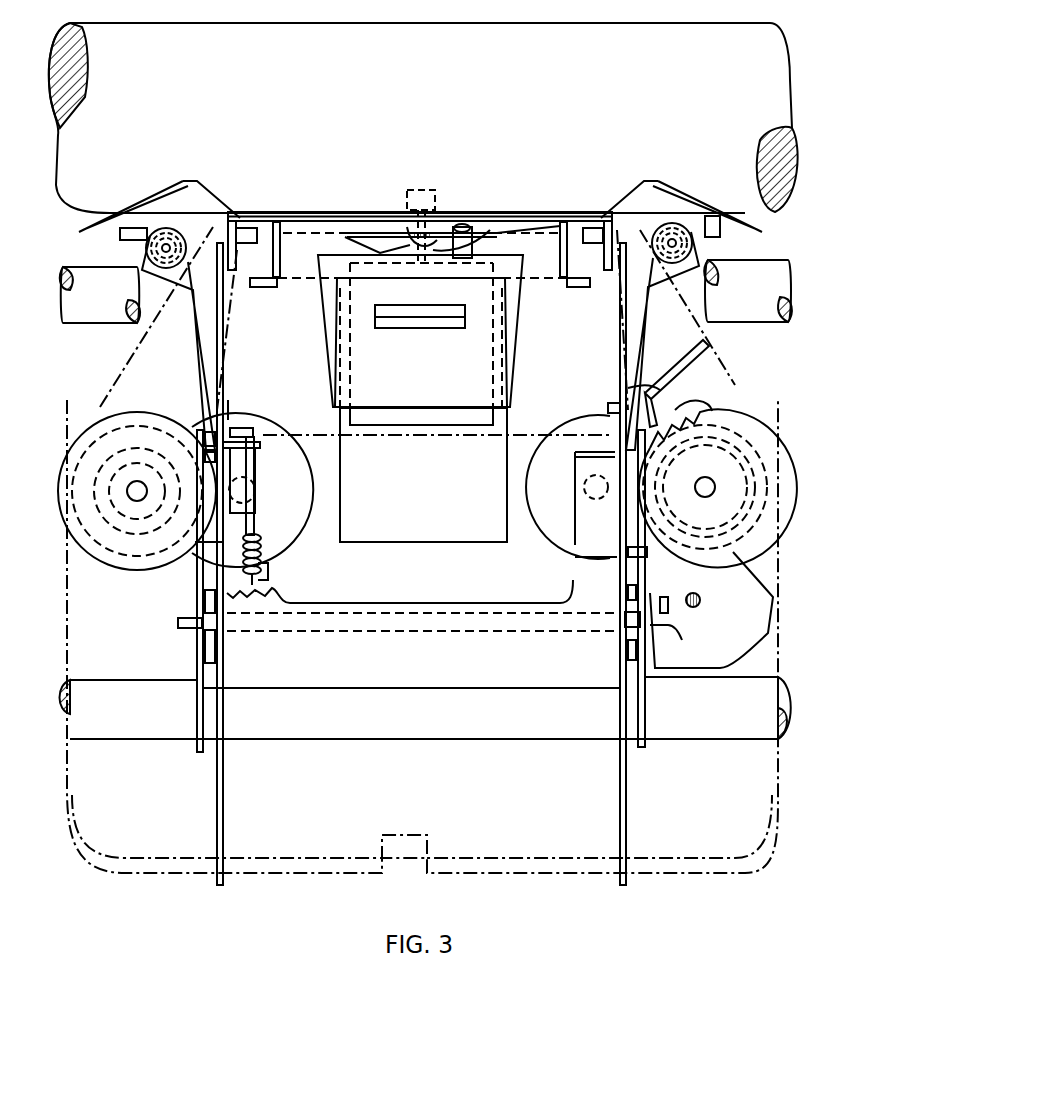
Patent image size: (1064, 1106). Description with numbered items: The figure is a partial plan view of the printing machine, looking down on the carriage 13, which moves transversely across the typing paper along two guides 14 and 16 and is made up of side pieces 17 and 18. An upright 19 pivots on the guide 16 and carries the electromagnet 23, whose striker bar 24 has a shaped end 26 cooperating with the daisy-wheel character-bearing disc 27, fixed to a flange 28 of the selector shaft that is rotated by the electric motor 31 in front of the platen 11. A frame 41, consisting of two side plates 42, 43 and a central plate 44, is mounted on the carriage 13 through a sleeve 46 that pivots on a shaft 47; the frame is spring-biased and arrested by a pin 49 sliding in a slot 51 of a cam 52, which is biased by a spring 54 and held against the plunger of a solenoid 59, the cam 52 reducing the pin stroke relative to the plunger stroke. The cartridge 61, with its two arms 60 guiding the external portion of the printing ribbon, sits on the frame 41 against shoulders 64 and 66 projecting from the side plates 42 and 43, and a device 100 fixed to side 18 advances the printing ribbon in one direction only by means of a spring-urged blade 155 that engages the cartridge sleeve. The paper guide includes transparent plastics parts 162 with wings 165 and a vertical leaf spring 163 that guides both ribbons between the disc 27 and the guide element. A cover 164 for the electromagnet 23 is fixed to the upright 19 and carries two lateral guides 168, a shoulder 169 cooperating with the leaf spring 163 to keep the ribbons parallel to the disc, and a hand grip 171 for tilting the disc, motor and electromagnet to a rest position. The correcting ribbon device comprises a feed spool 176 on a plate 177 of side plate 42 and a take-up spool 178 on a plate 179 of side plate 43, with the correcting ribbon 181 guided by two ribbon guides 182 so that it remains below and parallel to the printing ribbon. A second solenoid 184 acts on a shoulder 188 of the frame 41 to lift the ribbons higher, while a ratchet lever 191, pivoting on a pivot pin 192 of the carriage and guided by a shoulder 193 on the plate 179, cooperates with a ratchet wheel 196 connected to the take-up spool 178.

The platen 11 is at (778, 200).
The carriage 13 is at (113, 748).
The guide 14 is at (90, 730).
The guide 16 is at (95, 313).
The side piece 17 is at (201, 753).
The side piece 18 is at (643, 723).
The upright 19 is at (260, 287).
The electromagnet 23 is at (404, 410).
The striker bar 24 is at (448, 233).
The shaped end 26 is at (413, 248).
The character-bearing disc 27 is at (250, 232).
The flange 28 is at (380, 252).
The electric motor 31 is at (366, 535).
The frame 41 is at (216, 824).
The side plate 42 is at (224, 714).
The side plate 43 is at (621, 788).
The central plate 44 is at (350, 604).
The sleeve 46 is at (627, 620).
The shaft 47 is at (190, 630).
The pin 49 is at (252, 445).
The slot 51 is at (262, 445).
The cam 52 is at (250, 518).
The spring 54 is at (260, 565).
The solenoid 59 is at (306, 505).
The arm 60 is at (150, 352).
The cartridge 61 is at (680, 848).
The shoulder 64 is at (221, 407).
The shoulder 66 is at (613, 408).
The device 100 is at (740, 625).
The blade 155 is at (702, 600).
The part 162 is at (200, 204).
The leaf spring 163 is at (463, 228).
The cover 164 is at (477, 403).
The wing 165 is at (112, 213).
The lateral guide 168 is at (280, 265).
The shoulder 169 is at (477, 233).
The hand grip 171 is at (426, 320).
The feed spool 176 is at (90, 553).
The plate 177 is at (213, 543).
The take-up spool 178 is at (768, 522).
The plate 179 is at (633, 558).
The correcting ribbon 181 is at (190, 386).
The ribbon guide 182 is at (148, 248).
The solenoid 184 is at (548, 545).
The shoulder 188 is at (584, 517).
The ratchet lever 191 is at (698, 392).
The pivot pin 192 is at (660, 625).
The shoulder 193 is at (650, 383).
The ratchet wheel 196 is at (712, 410).